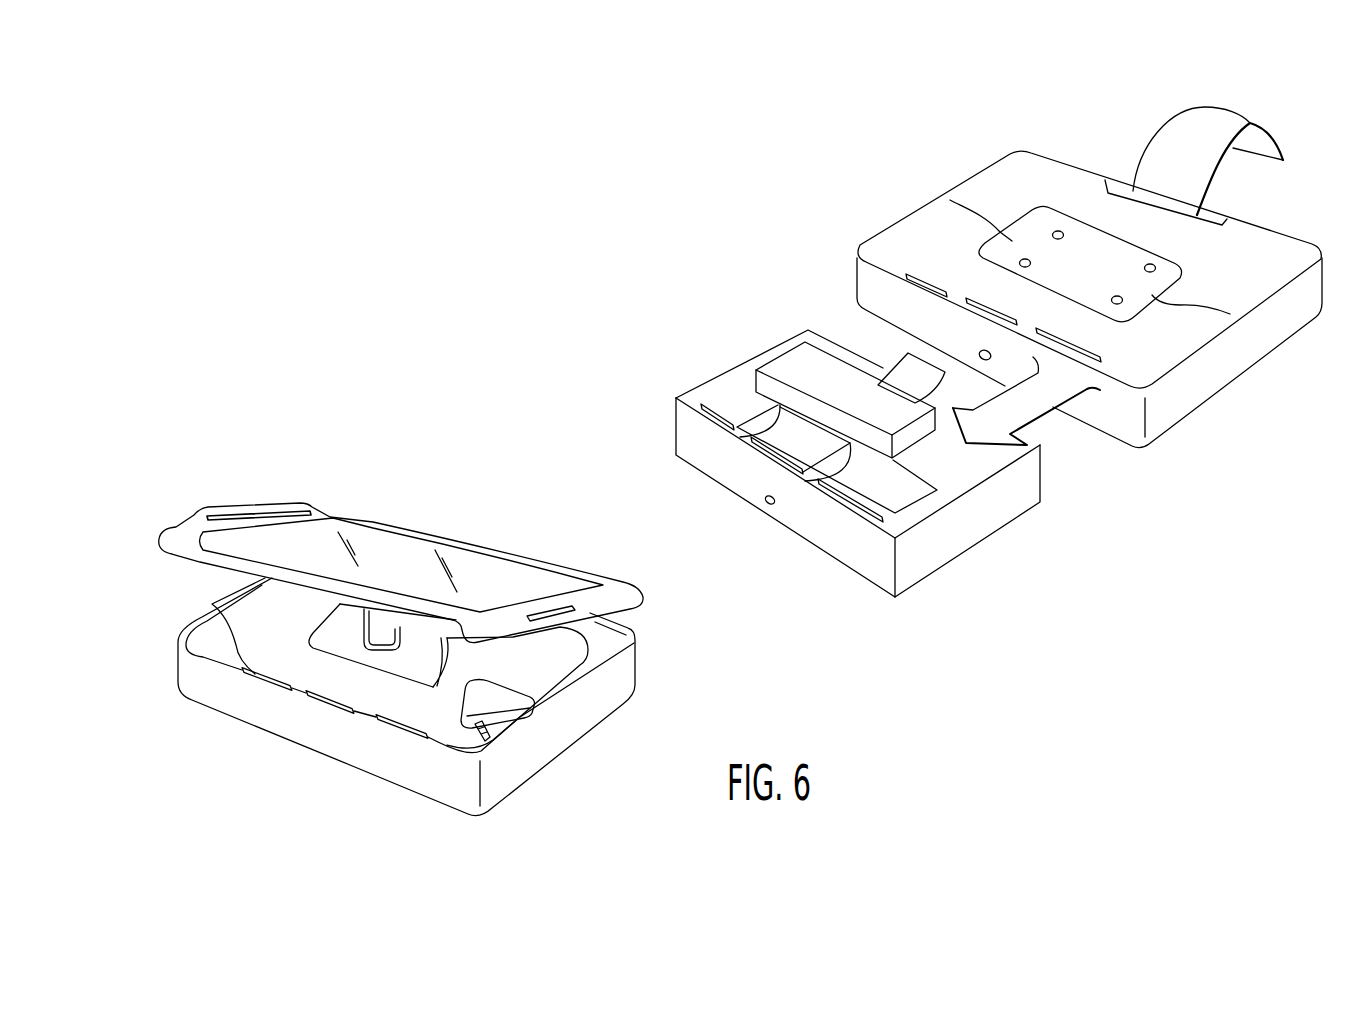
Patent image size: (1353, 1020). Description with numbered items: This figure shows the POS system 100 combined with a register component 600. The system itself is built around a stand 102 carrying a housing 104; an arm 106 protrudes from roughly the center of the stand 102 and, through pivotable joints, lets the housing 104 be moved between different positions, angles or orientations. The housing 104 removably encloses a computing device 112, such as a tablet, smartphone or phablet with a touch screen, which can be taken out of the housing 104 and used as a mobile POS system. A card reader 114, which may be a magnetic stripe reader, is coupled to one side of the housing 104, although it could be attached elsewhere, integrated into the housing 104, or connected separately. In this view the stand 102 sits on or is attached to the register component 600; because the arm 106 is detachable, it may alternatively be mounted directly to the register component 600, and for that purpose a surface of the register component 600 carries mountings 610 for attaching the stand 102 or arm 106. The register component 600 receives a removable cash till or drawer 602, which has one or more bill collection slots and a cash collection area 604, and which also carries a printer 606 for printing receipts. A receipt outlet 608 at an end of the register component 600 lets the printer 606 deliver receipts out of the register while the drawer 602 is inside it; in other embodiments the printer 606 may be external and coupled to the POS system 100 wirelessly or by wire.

The POS system 100 is at (350, 265).
The stand 102 is at (230, 630).
The housing 104 is at (158, 543).
The arm 106 is at (431, 666).
The computing device 112 is at (400, 543).
The card reader 114 is at (251, 505).
The register component 600 is at (303, 731).
The cash till or drawer 602 is at (675, 437).
The cash collection area 604 is at (837, 462).
The printer 606 is at (793, 362).
The receipt outlet 608 is at (1121, 192).
The mountings 610 is at (1098, 280).